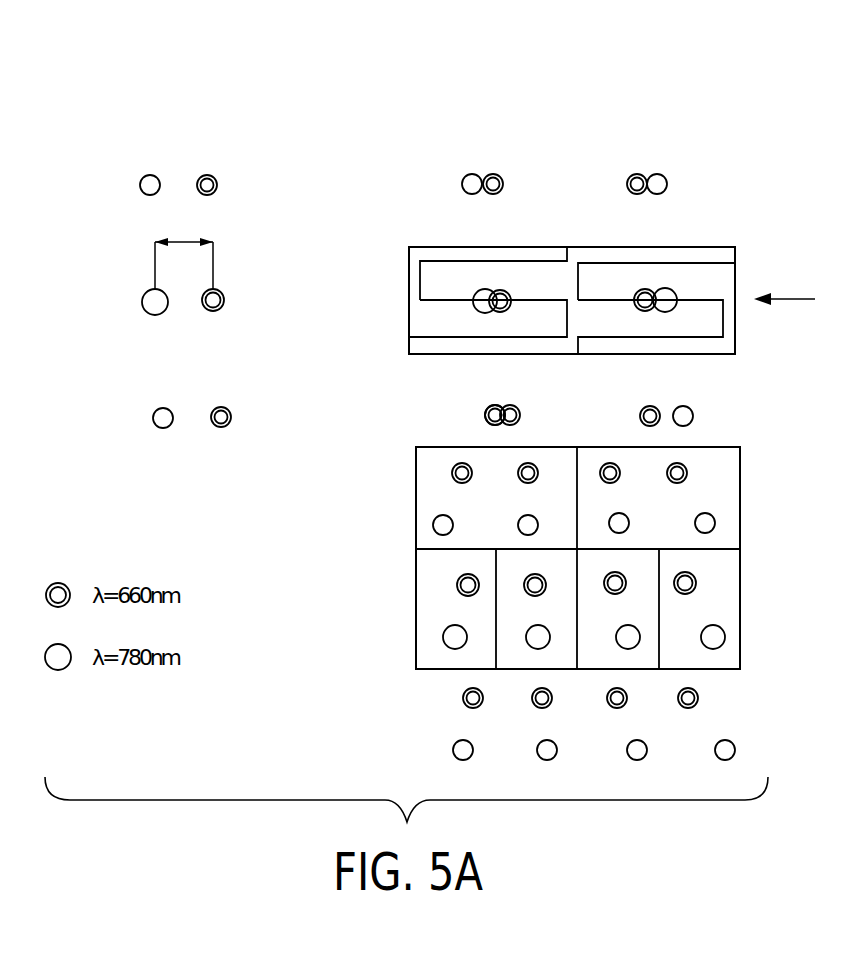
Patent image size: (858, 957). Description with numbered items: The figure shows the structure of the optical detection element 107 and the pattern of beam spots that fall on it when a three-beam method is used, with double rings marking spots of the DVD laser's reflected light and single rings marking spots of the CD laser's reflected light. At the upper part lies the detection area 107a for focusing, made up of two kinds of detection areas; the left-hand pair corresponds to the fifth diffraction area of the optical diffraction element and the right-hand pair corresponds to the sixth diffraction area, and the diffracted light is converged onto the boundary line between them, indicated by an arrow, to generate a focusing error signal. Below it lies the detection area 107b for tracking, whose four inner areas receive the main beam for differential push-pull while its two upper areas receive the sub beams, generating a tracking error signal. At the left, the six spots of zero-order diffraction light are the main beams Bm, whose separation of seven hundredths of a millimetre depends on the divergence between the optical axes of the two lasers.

The optical detection element 107 is at (475, 133).
The detection area for focusing 107a is at (409, 287).
The detection area for tracking 107b is at (416, 522).
The main beams Bm is at (127, 165).